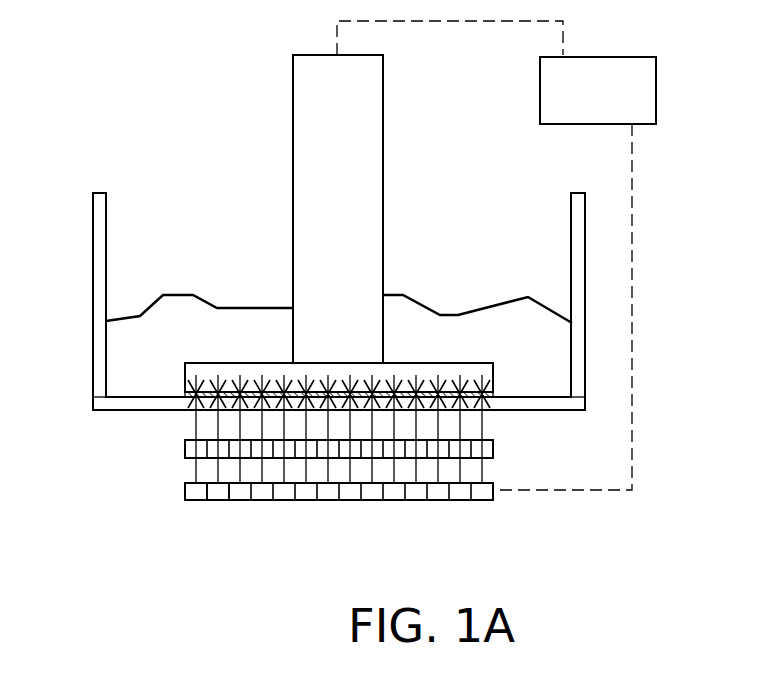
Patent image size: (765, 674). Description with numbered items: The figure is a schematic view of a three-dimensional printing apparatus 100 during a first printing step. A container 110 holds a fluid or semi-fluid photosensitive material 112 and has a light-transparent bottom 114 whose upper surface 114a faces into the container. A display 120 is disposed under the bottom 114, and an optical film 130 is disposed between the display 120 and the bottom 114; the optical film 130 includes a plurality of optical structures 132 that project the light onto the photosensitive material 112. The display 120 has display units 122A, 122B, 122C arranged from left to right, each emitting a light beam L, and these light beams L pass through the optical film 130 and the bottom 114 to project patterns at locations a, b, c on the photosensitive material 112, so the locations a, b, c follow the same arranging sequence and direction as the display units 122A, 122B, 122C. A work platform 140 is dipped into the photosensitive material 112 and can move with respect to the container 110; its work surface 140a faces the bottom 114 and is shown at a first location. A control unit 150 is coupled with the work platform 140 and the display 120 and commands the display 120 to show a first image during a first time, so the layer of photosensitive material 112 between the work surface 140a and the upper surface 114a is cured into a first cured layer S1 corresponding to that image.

The three-dimensional printing apparatus 100 is at (735, 580).
The container 110 is at (100, 206).
The photosensitive material 112 is at (248, 318).
The bottom 114 is at (530, 405).
The upper surface 114a is at (132, 395).
The display 120 is at (185, 488).
The display unit 122A is at (197, 500).
The display unit 122B is at (217, 500).
The display unit 122C is at (240, 500).
The optical film 130 is at (185, 448).
The optical structures 132 is at (192, 445).
The work platform 140 is at (310, 120).
The work surface 140a is at (477, 388).
The control unit 150 is at (638, 100).
The first cured layer S1 is at (452, 390).
The light beam L is at (183, 468).
The location a is at (196, 388).
The location b is at (218, 388).
The location c is at (240, 388).